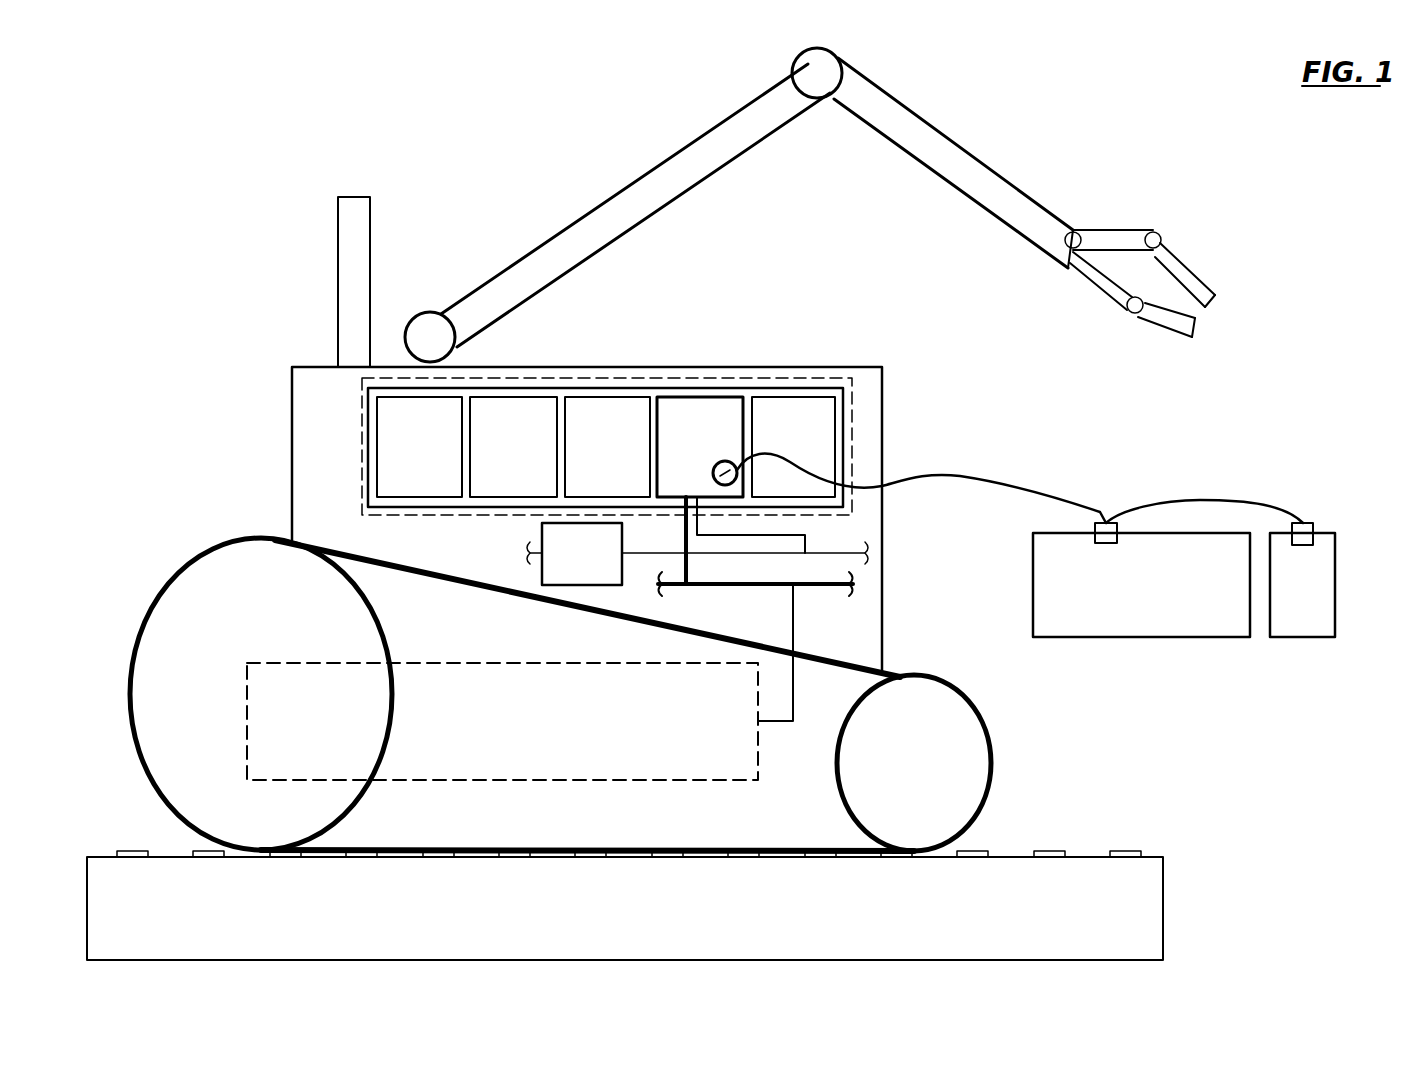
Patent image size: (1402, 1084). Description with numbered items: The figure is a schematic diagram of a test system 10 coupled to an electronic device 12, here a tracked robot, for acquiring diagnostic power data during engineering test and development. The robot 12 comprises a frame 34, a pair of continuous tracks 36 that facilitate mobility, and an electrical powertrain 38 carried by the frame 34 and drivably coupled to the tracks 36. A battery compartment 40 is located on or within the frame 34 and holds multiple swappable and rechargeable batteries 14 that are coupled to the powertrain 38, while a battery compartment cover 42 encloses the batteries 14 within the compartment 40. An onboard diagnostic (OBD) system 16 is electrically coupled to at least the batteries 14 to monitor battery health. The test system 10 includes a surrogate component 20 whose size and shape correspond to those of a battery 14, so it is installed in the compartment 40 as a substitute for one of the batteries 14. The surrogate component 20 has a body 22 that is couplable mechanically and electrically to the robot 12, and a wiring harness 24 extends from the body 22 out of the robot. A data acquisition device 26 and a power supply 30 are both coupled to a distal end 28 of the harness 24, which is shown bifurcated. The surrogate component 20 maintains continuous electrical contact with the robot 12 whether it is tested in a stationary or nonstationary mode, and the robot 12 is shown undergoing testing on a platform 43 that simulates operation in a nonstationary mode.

The test system 10 is at (676, 449).
The electronic device 12 is at (946, 104).
The batteries 14 is at (606, 447).
The onboard diagnostic (OBD) system 16 is at (582, 554).
The surrogate component 20 is at (700, 447).
The body 22 is at (649, 410).
The wiring harness 24 is at (973, 475).
The data acquisition device 26 is at (1141, 580).
The distal end 28 is at (1303, 522).
The power supply 30 is at (1302, 580).
The frame 34 is at (292, 378).
The continuous tracks 36 is at (345, 555).
The electrical powertrain 38 is at (502, 721).
The battery compartment 40 is at (362, 390).
The battery compartment cover 42 is at (362, 432).
The platform 43 is at (625, 905).